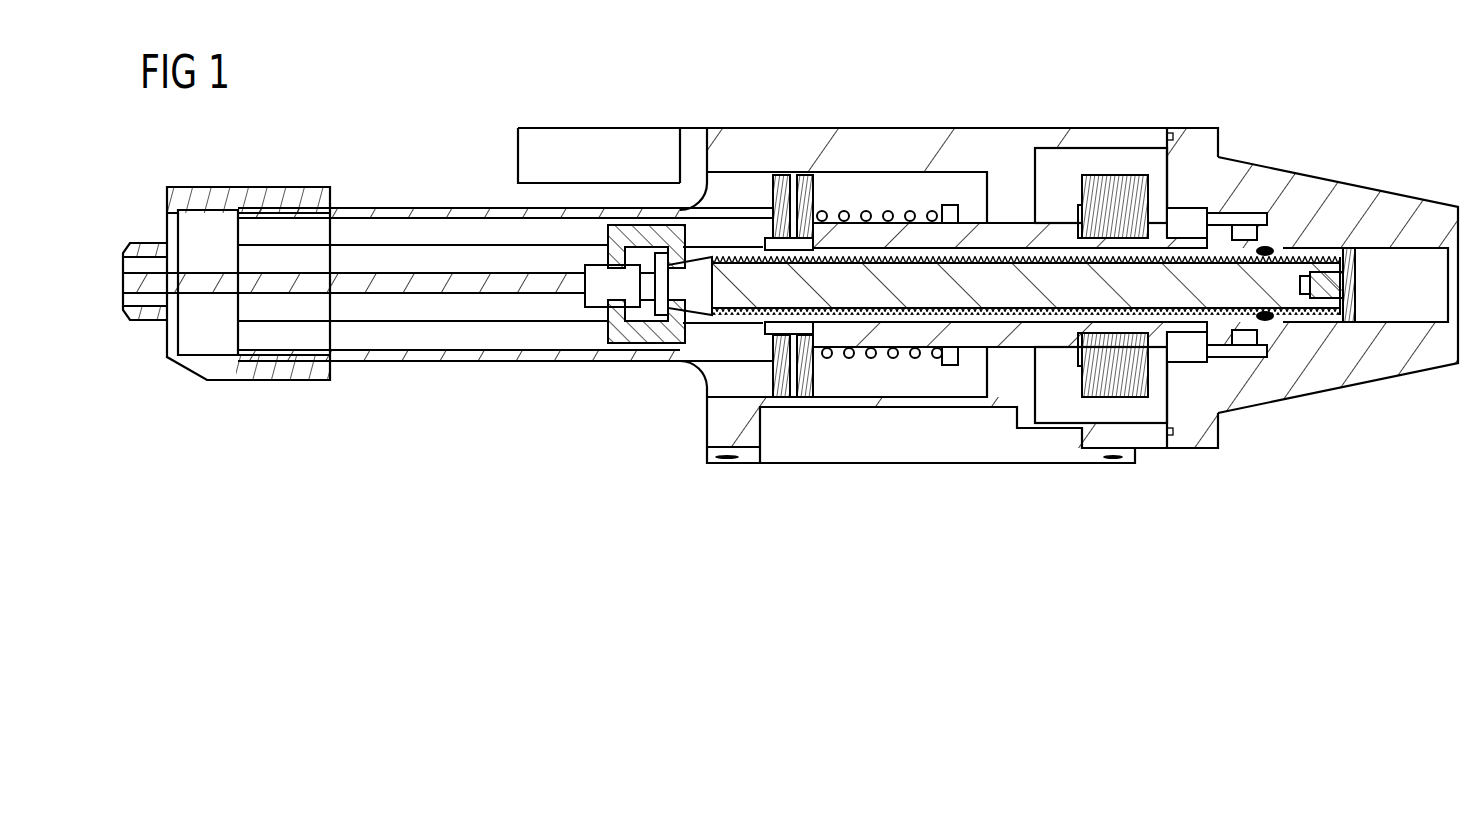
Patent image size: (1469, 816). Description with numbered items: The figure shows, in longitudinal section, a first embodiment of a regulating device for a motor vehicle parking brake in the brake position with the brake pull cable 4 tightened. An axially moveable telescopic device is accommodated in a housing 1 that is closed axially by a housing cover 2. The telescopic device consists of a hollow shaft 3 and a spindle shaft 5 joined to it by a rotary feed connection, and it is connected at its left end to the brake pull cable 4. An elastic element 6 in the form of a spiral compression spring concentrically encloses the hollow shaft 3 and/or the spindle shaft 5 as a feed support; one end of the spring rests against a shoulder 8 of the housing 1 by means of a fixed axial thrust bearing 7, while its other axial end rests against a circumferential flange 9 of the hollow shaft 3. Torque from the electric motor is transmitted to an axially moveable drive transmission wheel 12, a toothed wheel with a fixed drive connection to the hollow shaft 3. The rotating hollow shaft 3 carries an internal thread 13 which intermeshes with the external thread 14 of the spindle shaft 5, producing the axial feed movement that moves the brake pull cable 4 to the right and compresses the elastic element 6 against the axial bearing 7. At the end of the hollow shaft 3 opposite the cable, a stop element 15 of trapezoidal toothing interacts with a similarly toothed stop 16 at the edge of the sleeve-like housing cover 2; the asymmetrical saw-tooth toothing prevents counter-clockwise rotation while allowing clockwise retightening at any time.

The housing 1 is at (1100, 128).
The housing cover 2 is at (1375, 190).
The hollow shaft 3 is at (1013, 218).
The brake pull cable 4 is at (432, 290).
The spindle shaft 5 is at (700, 292).
The elastic element 6 is at (883, 208).
The axial thrust bearing 7 is at (778, 175).
The shoulder 8 is at (772, 210).
The circumferential flange 9 is at (948, 368).
The drive transmission wheel 12 is at (1130, 397).
The internal thread 13 is at (862, 308).
The external thread 14 is at (1200, 262).
The stop element 15 is at (1257, 318).
The stop 16 is at (1285, 250).